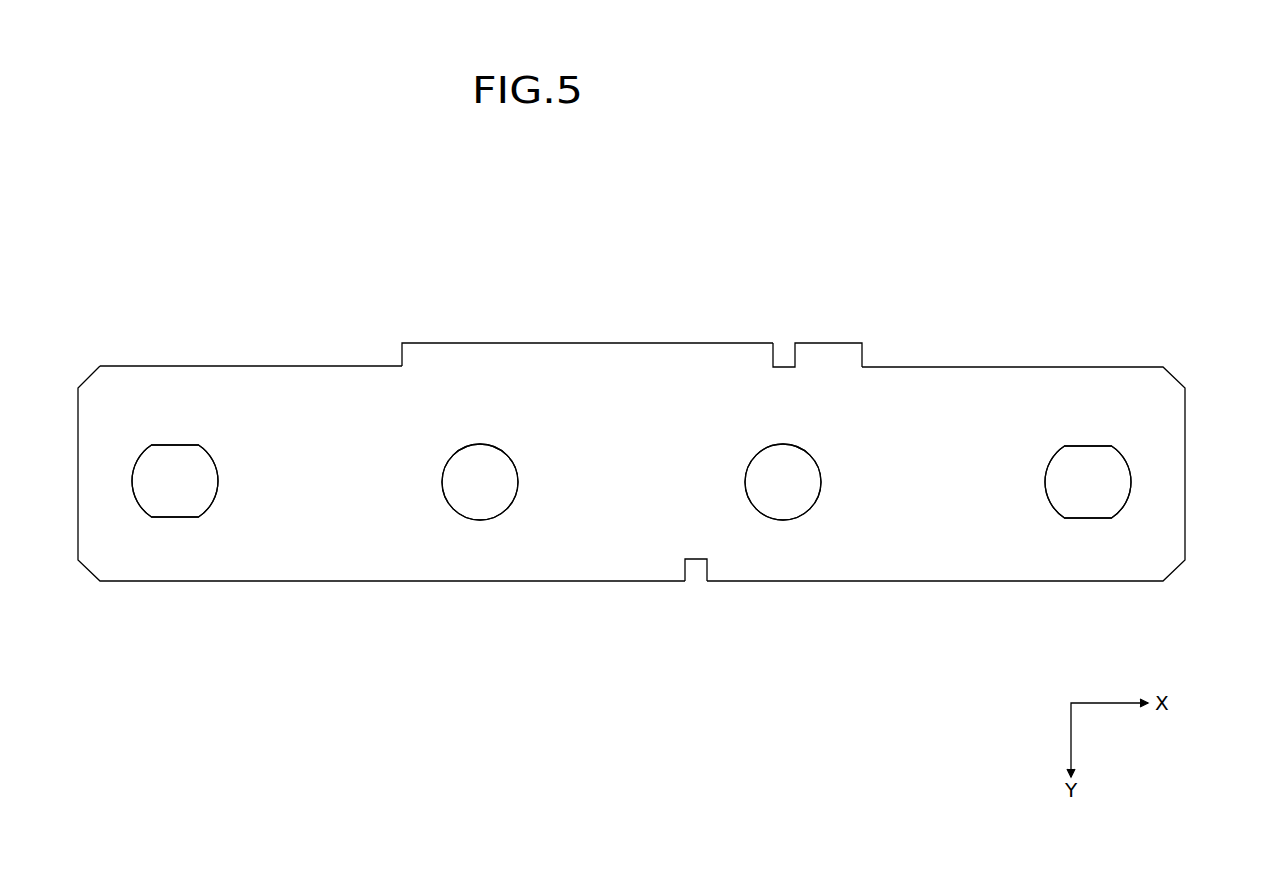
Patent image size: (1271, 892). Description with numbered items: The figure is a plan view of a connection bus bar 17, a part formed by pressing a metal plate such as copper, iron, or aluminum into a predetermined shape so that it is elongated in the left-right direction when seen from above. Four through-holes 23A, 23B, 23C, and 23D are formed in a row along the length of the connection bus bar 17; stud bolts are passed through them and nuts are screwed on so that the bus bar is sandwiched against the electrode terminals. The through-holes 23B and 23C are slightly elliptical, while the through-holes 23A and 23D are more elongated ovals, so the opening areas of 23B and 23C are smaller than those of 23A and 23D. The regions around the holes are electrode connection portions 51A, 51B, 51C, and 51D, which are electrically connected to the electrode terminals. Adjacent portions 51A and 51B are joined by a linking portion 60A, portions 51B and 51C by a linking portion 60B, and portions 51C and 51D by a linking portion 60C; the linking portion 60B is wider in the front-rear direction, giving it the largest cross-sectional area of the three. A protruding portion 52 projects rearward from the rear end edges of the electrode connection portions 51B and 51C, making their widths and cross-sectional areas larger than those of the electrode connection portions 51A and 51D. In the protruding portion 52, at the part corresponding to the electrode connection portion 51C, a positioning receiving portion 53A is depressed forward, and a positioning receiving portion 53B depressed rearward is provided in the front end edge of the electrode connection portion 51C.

The connection bus bar 17 is at (1163, 388).
The through-hole 23A is at (172, 446).
The through-hole 23B is at (485, 448).
The through-hole 23C is at (793, 448).
The through-hole 23D is at (1092, 448).
The electrode connection portion 51A is at (148, 438).
The electrode connection portion 51B is at (455, 438).
The electrode connection portion 51C is at (747, 445).
The electrode connection portion 51D is at (1055, 445).
The protruding portion 52 is at (402, 355).
The positioning receiving portion 53A is at (795, 352).
The positioning receiving portion 53B is at (688, 563).
The linking portion 60A is at (327, 475).
The linking portion 60B is at (652, 475).
The linking portion 60C is at (975, 475).